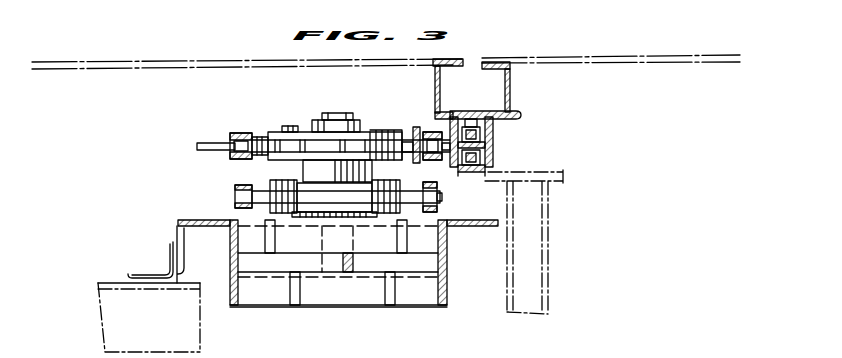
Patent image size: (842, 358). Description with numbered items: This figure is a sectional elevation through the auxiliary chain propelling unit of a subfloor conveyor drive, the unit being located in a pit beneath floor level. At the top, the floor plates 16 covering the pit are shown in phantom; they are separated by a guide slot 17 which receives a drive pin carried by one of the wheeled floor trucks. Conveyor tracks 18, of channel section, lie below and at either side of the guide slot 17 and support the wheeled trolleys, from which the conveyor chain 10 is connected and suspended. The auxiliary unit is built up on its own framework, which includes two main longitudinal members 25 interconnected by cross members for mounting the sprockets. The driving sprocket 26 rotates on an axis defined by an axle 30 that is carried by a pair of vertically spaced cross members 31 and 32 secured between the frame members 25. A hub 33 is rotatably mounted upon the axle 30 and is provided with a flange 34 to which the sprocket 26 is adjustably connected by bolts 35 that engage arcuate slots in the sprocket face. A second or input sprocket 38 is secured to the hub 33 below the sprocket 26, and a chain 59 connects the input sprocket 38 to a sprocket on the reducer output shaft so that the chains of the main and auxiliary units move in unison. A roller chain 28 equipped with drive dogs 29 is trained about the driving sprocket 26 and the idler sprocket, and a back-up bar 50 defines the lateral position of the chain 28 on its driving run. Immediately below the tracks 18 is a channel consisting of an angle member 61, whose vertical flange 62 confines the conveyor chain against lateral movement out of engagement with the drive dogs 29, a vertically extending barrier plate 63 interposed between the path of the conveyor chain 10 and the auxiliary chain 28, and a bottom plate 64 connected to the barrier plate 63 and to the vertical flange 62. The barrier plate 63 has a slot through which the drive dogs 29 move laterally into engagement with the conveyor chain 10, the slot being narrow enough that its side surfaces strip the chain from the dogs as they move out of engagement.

The conveyor chain 10 is at (474, 118).
The floor plates 16 is at (193, 62).
The guide slot 17 is at (471, 75).
The conveyor tracks 18 is at (526, 90).
The main longitudinal members 25 is at (230, 243).
The driving sprocket 26 is at (260, 137).
The roller chain 28 is at (238, 133).
The drive dogs 29 is at (221, 150).
The axle 30 is at (354, 263).
The cross member 31 is at (312, 242).
The cross member 32 is at (313, 292).
The hub 33 is at (300, 173).
The flange 34 is at (273, 155).
The bolts 35 is at (298, 122).
The input sprocket 38 is at (440, 200).
The back-up bar 50 is at (417, 162).
The chain 59 is at (235, 188).
The angle member 61 is at (508, 124).
The vertical flange 62 is at (488, 151).
The barrier plate 63 is at (449, 176).
The bottom plate 64 is at (471, 173).